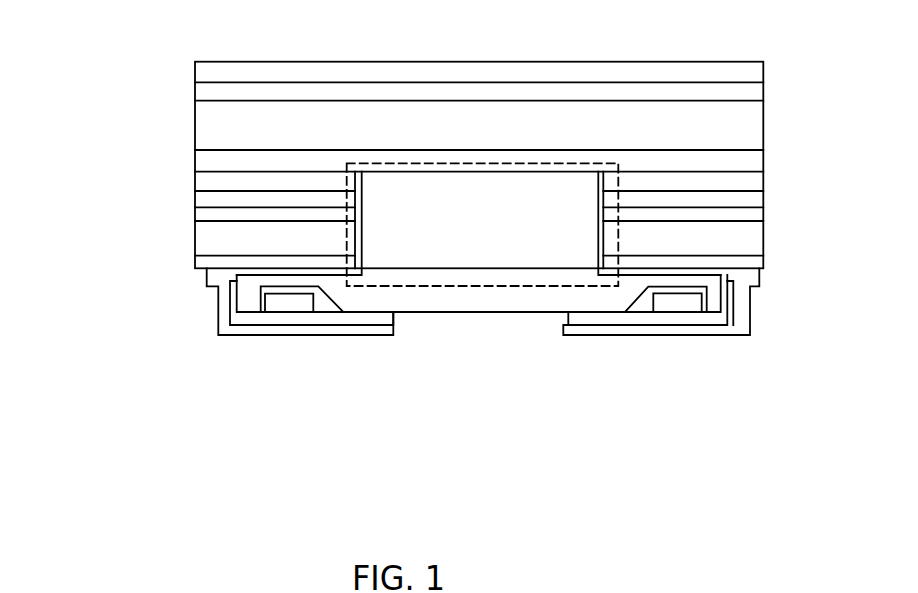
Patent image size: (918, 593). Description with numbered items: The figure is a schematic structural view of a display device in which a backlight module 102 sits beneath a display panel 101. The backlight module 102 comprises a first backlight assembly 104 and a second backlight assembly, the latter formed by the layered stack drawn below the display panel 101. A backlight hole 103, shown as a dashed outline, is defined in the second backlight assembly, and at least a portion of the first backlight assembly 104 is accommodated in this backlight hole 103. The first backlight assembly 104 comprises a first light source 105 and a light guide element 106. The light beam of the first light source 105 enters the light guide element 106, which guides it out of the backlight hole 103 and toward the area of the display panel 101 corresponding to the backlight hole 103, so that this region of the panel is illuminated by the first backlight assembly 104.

The display panel 101 is at (153, 57).
The backlight module 102 is at (153, 173).
The backlight hole 103 is at (545, 287).
The first backlight assembly 104 is at (385, 433).
The first light source 105 is at (292, 303).
The light guide element 106 is at (425, 248).